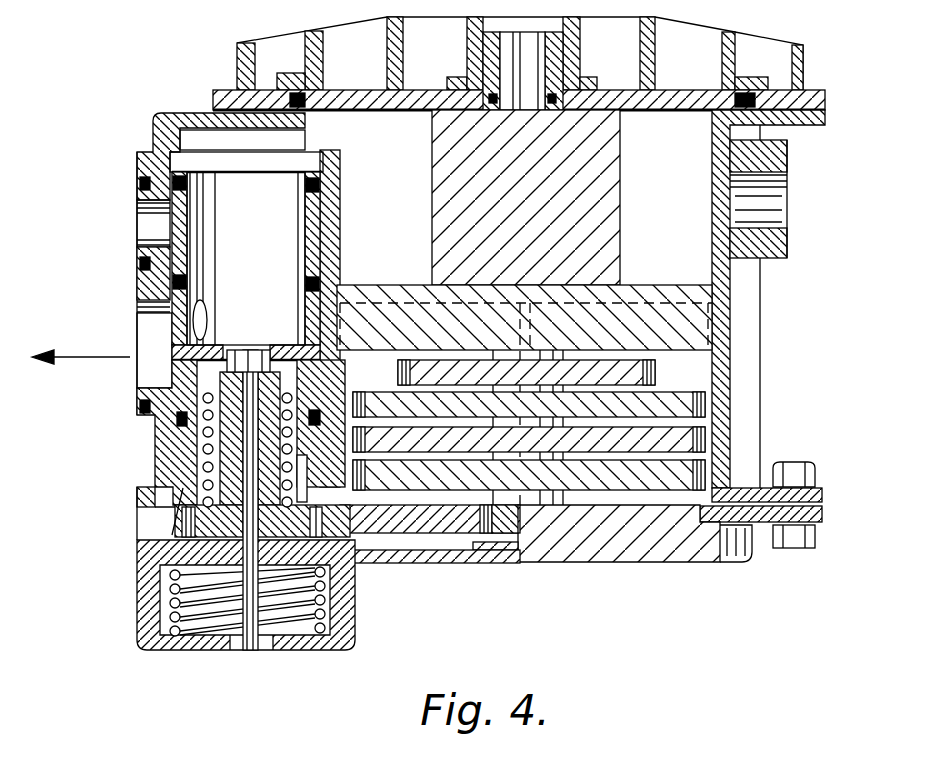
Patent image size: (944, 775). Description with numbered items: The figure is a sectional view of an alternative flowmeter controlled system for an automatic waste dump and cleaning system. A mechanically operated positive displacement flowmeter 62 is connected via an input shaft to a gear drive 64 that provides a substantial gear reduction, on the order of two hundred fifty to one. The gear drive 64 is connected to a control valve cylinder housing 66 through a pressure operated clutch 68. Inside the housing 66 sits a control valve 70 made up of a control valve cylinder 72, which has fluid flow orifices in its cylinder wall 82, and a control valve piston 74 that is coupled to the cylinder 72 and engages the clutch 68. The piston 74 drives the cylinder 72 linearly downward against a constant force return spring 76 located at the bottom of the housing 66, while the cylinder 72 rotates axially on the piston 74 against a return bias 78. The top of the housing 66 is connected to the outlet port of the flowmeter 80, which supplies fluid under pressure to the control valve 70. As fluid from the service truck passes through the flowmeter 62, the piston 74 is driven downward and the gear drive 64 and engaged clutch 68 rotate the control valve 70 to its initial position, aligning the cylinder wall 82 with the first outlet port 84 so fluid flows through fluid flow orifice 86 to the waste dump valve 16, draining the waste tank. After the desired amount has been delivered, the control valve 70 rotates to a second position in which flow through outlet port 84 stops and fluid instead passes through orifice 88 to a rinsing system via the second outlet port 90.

The positive displacement flowmeter 62 is at (612, 160).
The gear drive 64 is at (655, 370).
The control valve cylinder housing 66 is at (207, 110).
The pressure operated clutch 68 is at (187, 522).
The control valve 70 is at (220, 167).
The control valve cylinder 72 is at (330, 220).
The control valve piston 74 is at (250, 628).
The constant force return spring 76 is at (200, 444).
The return bias 78 is at (325, 602).
The outlet port of the flowmeter 80 is at (300, 138).
The cylinder wall 82 is at (292, 250).
The first outlet port 84 is at (155, 326).
The fluid flow orifice 86 is at (203, 315).
The orifice 88 is at (190, 222).
The second outlet port 90 is at (160, 222).
The waste dump valve 16 is at (81, 366).